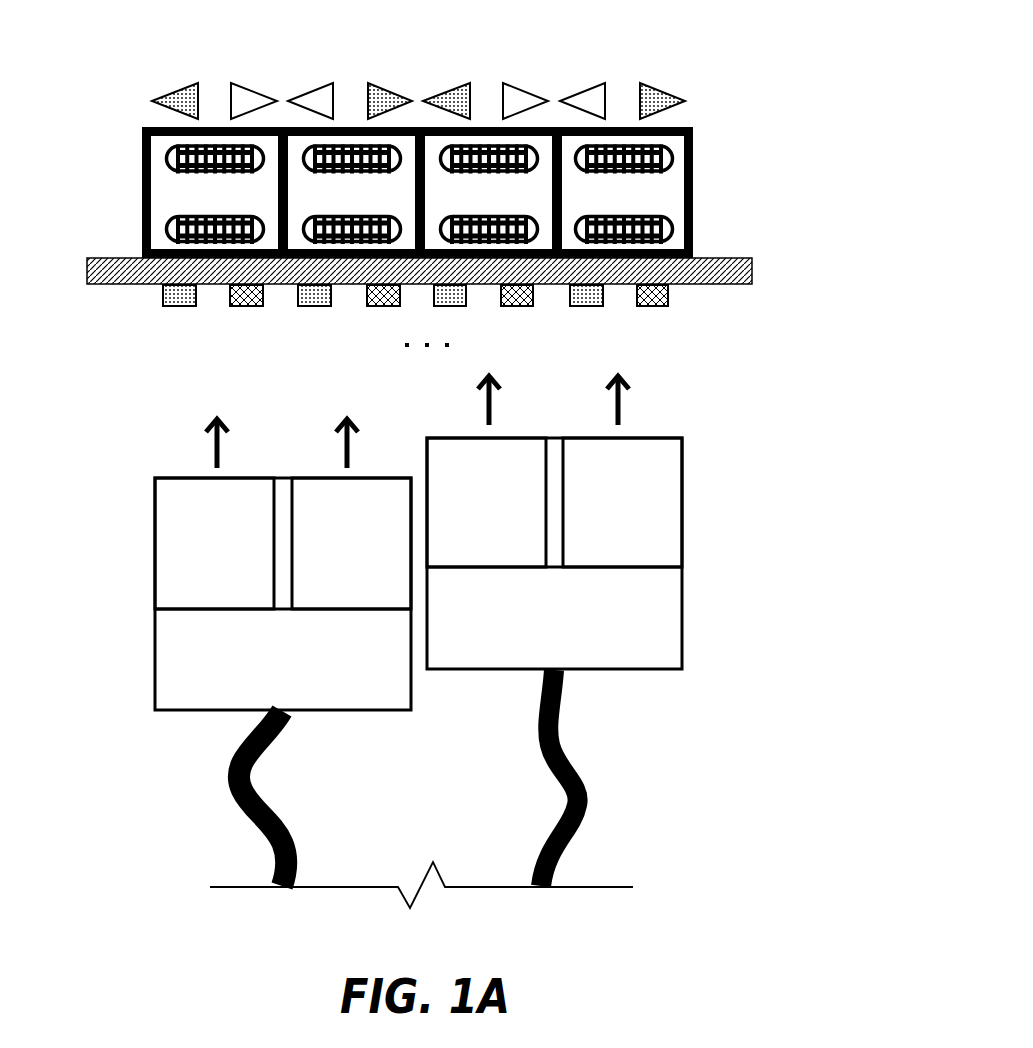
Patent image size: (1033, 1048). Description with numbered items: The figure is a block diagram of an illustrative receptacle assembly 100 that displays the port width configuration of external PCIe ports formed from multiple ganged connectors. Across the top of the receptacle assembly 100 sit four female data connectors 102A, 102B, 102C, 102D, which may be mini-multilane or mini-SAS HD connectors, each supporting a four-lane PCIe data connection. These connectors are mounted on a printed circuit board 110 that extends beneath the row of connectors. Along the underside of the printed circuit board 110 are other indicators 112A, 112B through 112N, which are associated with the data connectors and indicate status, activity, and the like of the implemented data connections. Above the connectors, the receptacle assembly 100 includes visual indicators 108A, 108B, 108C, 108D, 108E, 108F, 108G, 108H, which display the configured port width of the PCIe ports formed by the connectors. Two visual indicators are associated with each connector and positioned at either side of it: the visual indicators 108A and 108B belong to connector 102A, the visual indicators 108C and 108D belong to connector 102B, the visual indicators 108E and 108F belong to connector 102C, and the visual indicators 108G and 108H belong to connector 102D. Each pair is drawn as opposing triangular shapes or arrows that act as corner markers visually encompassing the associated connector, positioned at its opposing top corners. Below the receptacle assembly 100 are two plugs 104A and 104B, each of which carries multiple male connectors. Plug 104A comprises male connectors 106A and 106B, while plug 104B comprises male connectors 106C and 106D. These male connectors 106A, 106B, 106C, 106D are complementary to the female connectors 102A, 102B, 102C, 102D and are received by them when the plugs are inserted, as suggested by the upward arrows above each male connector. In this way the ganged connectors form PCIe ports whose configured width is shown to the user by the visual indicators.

The receptacle assembly 100 is at (763, 77).
The female data connector 102A is at (240, 206).
The female data connector 102B is at (378, 206).
The female data connector 102C is at (514, 206).
The female data connector 102D is at (648, 206).
The plug 104A is at (272, 652).
The plug 104B is at (546, 631).
The male connector 106A is at (236, 556).
The male connector 106B is at (378, 556).
The male connector 106C is at (515, 516).
The male connector 106D is at (657, 516).
The visual indicator 108A is at (184, 94).
The visual indicator 108B is at (245, 97).
The visual indicator 108C is at (318, 96).
The visual indicator 108D is at (378, 96).
The visual indicator 108E is at (452, 94).
The visual indicator 108F is at (510, 97).
The visual indicator 108G is at (588, 96).
The visual indicator 108H is at (648, 96).
The printed circuit board 110 is at (728, 270).
The other indicator 112A is at (180, 298).
The other indicator 112B is at (248, 298).
The other indicator 112N is at (653, 296).